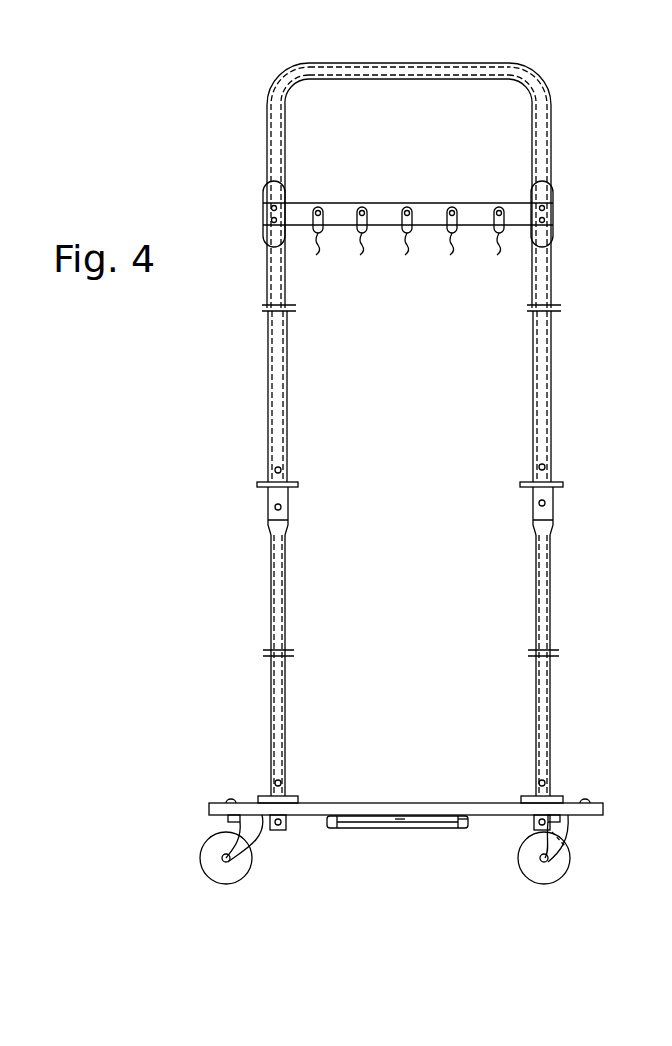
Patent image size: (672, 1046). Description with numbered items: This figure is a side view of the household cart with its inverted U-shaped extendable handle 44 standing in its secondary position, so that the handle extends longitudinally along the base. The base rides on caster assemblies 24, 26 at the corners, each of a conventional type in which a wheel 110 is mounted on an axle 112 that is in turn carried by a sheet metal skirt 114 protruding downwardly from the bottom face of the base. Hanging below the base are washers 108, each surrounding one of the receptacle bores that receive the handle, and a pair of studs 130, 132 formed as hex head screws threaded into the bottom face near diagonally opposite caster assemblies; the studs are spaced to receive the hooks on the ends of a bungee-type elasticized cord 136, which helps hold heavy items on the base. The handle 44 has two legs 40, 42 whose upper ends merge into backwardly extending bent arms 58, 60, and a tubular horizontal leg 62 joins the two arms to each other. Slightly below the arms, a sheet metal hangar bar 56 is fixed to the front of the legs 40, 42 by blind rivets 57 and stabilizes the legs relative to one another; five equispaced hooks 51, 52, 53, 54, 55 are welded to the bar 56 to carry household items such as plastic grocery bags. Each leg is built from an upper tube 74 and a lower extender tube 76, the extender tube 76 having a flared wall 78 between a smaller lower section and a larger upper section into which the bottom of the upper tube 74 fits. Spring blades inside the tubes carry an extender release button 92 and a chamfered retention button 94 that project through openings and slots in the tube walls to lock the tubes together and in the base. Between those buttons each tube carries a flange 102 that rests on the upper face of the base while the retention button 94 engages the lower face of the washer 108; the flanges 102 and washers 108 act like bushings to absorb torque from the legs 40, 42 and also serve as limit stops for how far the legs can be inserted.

The caster assembly 24 is at (216, 873).
The caster assembly 26 is at (562, 877).
The leg 40 is at (550, 632).
The leg 42 is at (272, 628).
The extendable handle 44 is at (250, 590).
The hook 51 is at (314, 246).
The hook 52 is at (359, 246).
The hook 53 is at (407, 246).
The hook 54 is at (454, 246).
The hook 55 is at (502, 246).
The hangar bar 56 is at (430, 203).
The blind rivet 57 is at (270, 208).
The bent arm 58 is at (548, 125).
The bent arm 60 is at (272, 130).
The tubular horizontal leg 62 is at (352, 72).
The upper tube 74 is at (272, 365).
The extender tube 76 is at (286, 588).
The flared wall 78 is at (287, 528).
The extender release button 92 is at (280, 470).
The chamfered retention button 94 is at (276, 507).
The flange 102 is at (265, 484).
The washer 108 is at (290, 826).
The wheel 110 is at (210, 845).
The axle 112 is at (222, 858).
The sheet metal skirt 114 is at (240, 830).
The stud 130 is at (335, 828).
The stud 132 is at (458, 828).
The elasticized cord 136 is at (400, 828).